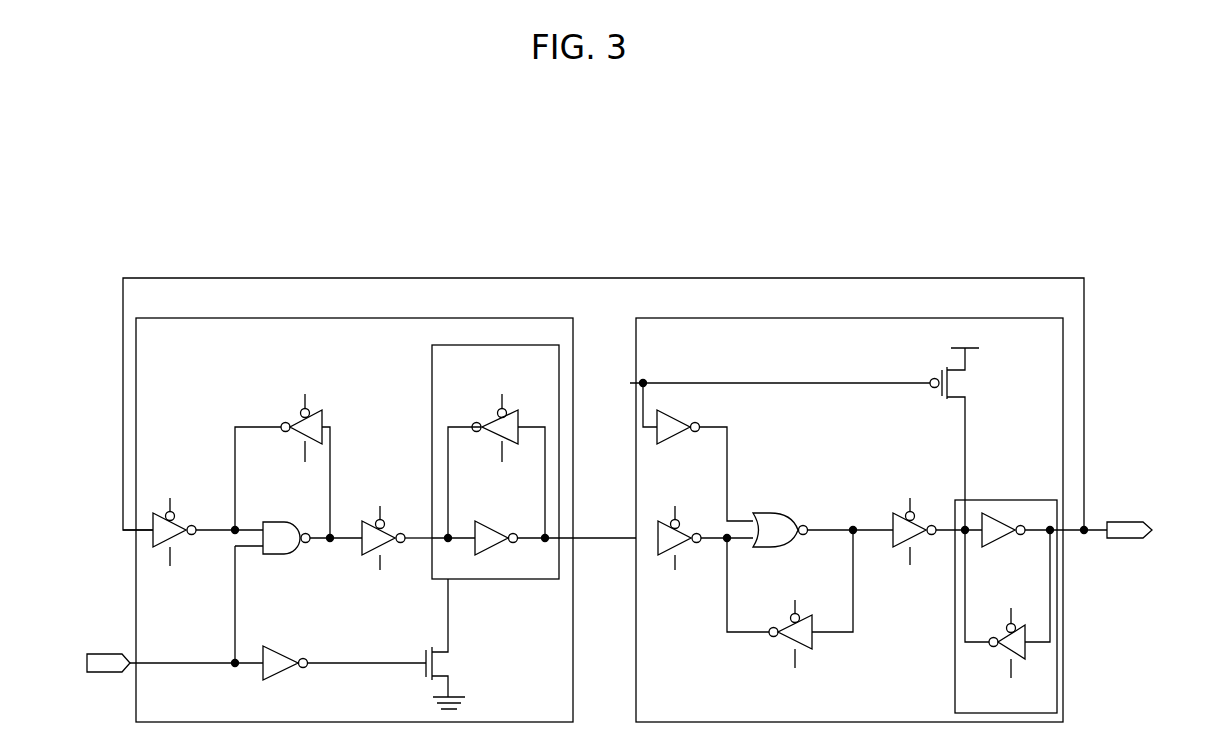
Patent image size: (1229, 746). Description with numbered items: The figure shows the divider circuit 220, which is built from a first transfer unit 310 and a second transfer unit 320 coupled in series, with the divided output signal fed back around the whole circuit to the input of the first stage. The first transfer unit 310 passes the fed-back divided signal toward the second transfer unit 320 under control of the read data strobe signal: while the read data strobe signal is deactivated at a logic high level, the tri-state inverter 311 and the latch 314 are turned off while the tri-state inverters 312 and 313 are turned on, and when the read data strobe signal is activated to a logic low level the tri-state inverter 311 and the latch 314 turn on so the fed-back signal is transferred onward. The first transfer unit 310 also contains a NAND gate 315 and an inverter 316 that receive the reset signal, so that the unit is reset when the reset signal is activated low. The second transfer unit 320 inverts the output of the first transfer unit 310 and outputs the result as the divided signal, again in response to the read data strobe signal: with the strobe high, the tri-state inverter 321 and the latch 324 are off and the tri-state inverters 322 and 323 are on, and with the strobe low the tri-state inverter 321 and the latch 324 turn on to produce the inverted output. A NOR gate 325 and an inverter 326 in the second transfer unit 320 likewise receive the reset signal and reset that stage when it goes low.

The divider circuit 220 is at (973, 238).
The first transfer unit 310 is at (530, 318).
The tri-state inverter 311 is at (193, 525).
The tri-state inverter 312 is at (313, 418).
The tri-state inverter 313 is at (386, 522).
The latch 314 is at (514, 345).
The NAND gate 315 is at (296, 557).
The inverter 316 is at (285, 652).
The second transfer unit 320 is at (1022, 318).
The tri-state inverter 321 is at (661, 553).
The tri-state inverter 322 is at (780, 637).
The tri-state inverter 323 is at (898, 520).
The latch 324 is at (1006, 500).
The NOR gate 325 is at (786, 516).
The inverter 326 is at (678, 418).